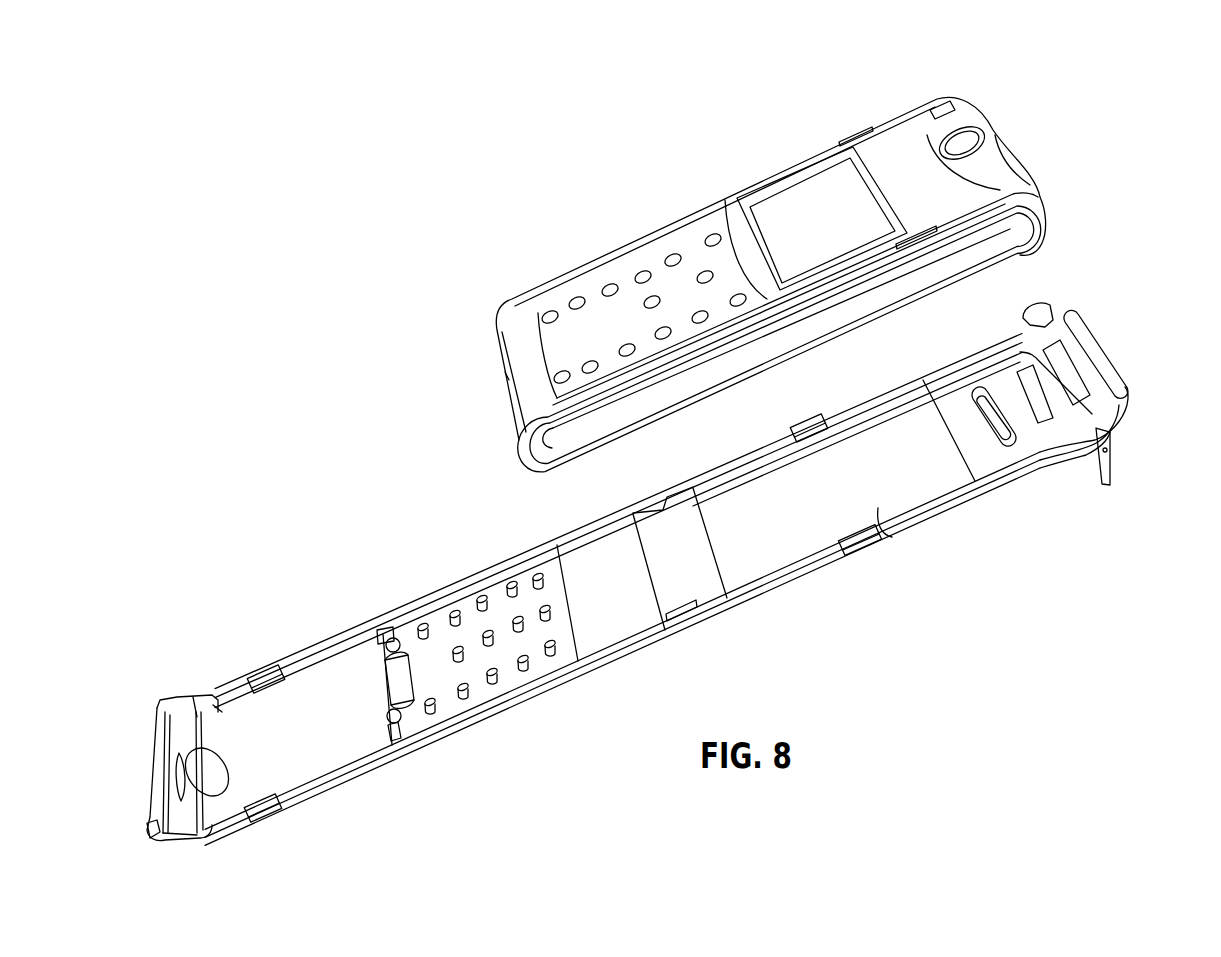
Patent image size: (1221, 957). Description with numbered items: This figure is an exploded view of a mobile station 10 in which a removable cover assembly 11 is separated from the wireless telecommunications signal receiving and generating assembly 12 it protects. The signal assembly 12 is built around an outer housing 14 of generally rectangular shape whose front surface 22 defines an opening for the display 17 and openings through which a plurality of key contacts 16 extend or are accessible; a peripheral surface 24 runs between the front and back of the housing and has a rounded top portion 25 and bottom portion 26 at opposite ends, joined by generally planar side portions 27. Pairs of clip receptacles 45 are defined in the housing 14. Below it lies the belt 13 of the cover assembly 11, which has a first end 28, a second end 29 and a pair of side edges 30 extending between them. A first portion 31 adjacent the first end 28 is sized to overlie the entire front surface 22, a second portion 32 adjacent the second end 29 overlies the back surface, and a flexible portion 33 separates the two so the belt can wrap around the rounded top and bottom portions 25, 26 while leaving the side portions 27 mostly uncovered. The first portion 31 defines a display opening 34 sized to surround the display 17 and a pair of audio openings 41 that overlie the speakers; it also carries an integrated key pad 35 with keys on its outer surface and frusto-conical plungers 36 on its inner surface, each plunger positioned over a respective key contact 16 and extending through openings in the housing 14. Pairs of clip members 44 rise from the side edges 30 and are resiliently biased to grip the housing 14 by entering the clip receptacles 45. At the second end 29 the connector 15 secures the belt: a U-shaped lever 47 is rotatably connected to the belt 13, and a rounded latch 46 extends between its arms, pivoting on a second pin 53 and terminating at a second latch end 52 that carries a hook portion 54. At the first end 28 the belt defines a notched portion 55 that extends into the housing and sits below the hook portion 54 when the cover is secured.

The mobile station 10 is at (462, 219).
The cover assembly 11 is at (430, 554).
The wireless telecommunications signal receiving and generating assembly 12 is at (668, 190).
The belt 13 is at (683, 630).
The outer housing 14 is at (505, 372).
The connector 15 is at (1100, 294).
The key contacts 16 is at (565, 303).
The display 17 is at (822, 228).
The front surface 22 is at (530, 358).
The peripheral surface 24 is at (528, 462).
The top portion 25 is at (516, 430).
The bottom portion 26 is at (1035, 180).
The side portions 27 is at (723, 372).
The first end 28 is at (163, 698).
The second end 29 is at (1093, 445).
The side edges 30 is at (517, 553).
The first portion 31 is at (434, 725).
The second portion 32 is at (880, 512).
The flexible portion 33 is at (593, 528).
The display opening 34 is at (205, 828).
The key pad 35 is at (470, 630).
The plungers 36 is at (428, 620).
The audio openings 41 is at (222, 692).
The clip members 44 is at (267, 683).
The clip receptacles 45 is at (845, 143).
The latch 46 is at (1133, 390).
The lever 47 is at (1112, 472).
The second latch end 52 is at (1112, 350).
The second pin 53 is at (1109, 450).
The hook portion 54 is at (1132, 372).
The notched portion 55 is at (157, 770).